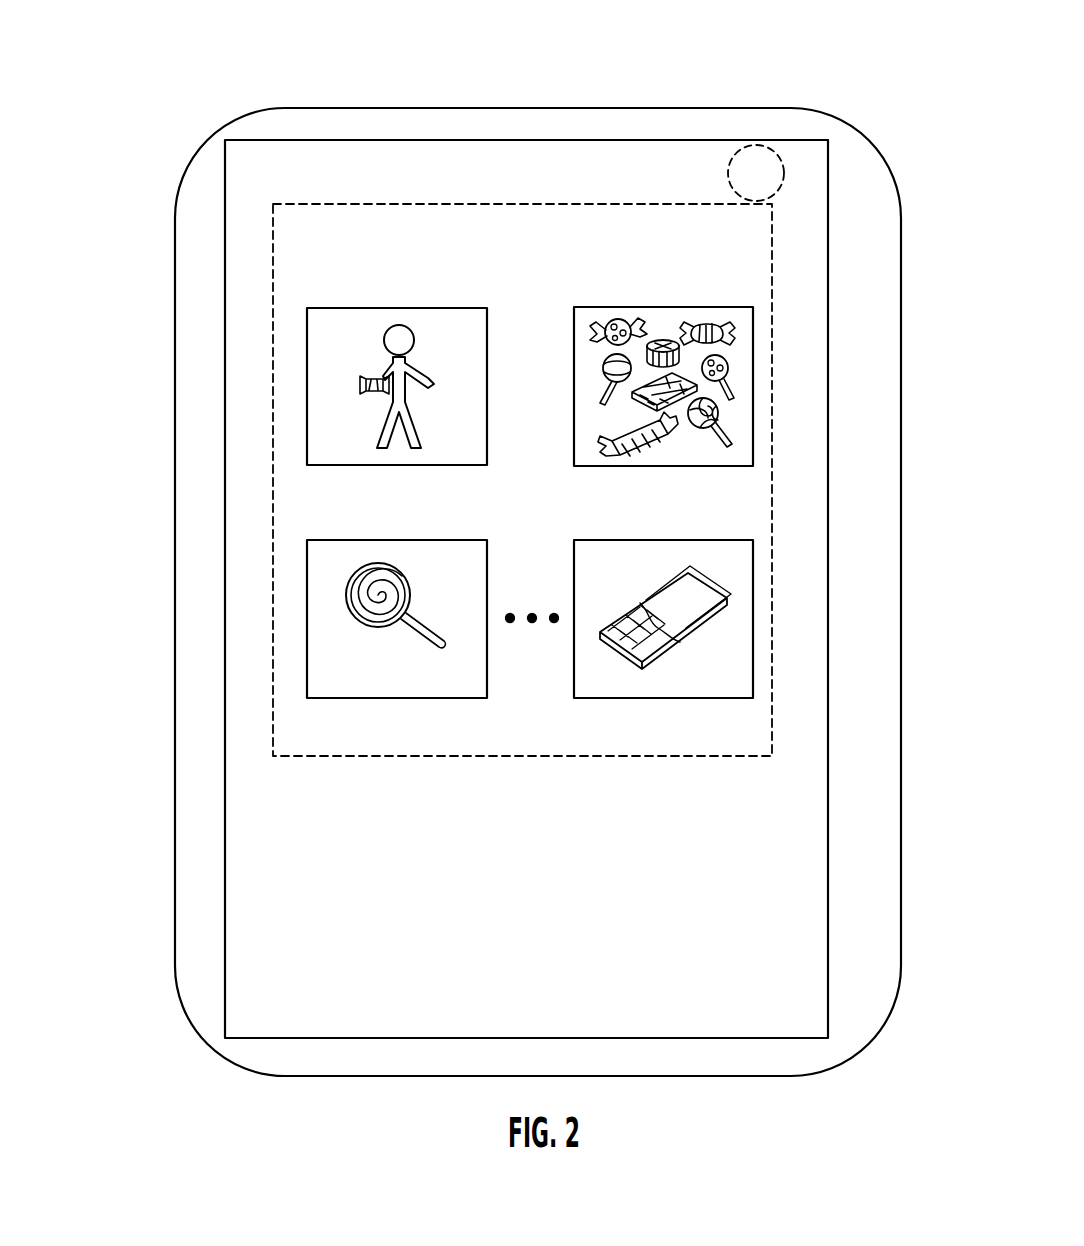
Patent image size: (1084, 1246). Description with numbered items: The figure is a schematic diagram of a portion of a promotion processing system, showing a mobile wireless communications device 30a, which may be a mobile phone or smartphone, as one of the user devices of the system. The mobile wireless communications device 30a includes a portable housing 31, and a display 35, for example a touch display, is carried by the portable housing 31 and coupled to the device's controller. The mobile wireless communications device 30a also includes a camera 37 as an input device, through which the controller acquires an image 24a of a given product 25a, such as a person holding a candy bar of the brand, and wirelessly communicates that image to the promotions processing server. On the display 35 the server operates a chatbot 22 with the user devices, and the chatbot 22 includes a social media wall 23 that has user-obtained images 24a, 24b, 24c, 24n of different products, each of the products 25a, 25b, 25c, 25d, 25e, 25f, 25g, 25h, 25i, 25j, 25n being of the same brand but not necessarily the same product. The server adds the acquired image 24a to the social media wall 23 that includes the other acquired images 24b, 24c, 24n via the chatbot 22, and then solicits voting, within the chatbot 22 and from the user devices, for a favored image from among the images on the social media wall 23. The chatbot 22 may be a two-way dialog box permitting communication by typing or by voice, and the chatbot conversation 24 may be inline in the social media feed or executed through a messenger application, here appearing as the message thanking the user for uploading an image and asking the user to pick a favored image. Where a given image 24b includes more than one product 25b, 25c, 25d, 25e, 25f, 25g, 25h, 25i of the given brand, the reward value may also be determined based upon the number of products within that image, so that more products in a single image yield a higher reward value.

The mobile wireless communications device 30a is at (391, 90).
The portable housing 31 is at (481, 108).
The display 35 is at (540, 170).
The camera 37 is at (770, 148).
The social media wall 23 is at (272, 230).
The chatbot 22 is at (248, 804).
The chatbot conversation 24 is at (255, 838).
The acquired image 24a is at (320, 355).
The image 24b is at (743, 342).
The image 24c is at (313, 563).
The image 24n is at (740, 578).
The given product 25a is at (360, 386).
The product 25b is at (612, 320).
The product 25c is at (662, 340).
The product 25d is at (730, 330).
The product 25e is at (728, 370).
The product 25f is at (718, 425).
The product 25g is at (612, 453).
The product 25h is at (643, 393).
The product 25i is at (603, 362).
The product 25j is at (355, 600).
The product 25n is at (728, 600).